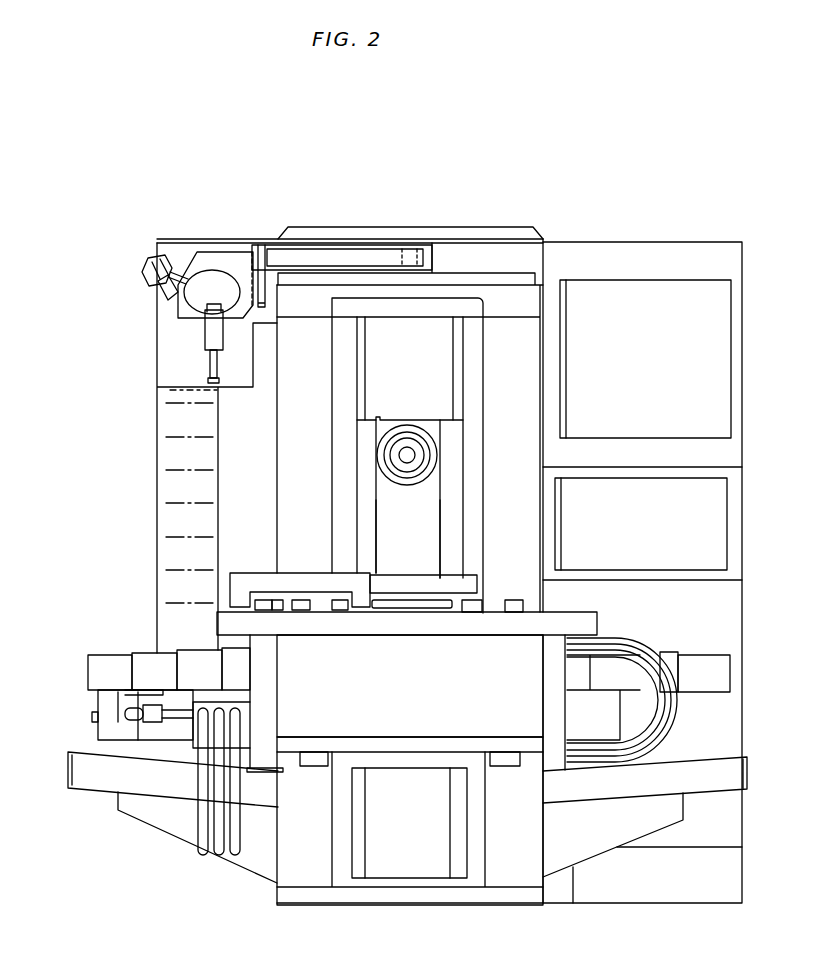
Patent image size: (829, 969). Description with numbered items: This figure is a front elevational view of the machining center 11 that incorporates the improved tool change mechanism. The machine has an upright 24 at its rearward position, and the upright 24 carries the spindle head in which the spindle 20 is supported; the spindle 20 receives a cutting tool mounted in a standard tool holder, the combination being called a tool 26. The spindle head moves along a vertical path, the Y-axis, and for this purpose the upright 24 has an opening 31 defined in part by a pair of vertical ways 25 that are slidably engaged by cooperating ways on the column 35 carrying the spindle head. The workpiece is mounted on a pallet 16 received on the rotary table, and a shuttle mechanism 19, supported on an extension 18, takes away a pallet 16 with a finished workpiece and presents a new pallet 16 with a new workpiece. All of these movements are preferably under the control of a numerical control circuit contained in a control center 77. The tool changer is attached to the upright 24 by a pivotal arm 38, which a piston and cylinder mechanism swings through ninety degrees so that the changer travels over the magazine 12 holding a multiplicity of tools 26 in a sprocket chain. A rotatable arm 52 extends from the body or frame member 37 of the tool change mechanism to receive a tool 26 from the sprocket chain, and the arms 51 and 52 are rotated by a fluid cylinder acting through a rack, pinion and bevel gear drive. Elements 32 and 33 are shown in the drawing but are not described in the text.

The machining center 11 is at (138, 850).
The magazine 12 is at (172, 485).
The pallet 16 is at (288, 580).
The extension 18 is at (297, 877).
The shuttle mechanism 19 is at (353, 622).
The spindle 20 is at (413, 476).
The upright 24 is at (487, 257).
The vertical ways 25 is at (468, 357).
The tool 26 is at (143, 277).
The opening 31 is at (437, 400).
The left bracket 32 is at (103, 672).
The right bracket 33 is at (707, 676).
The column 35 is at (423, 557).
The body or frame member 37 is at (213, 262).
The pivotal arm 38 is at (342, 253).
The arm 51 is at (180, 270).
The rotatable arm 52 is at (212, 338).
The control center 77 is at (712, 373).